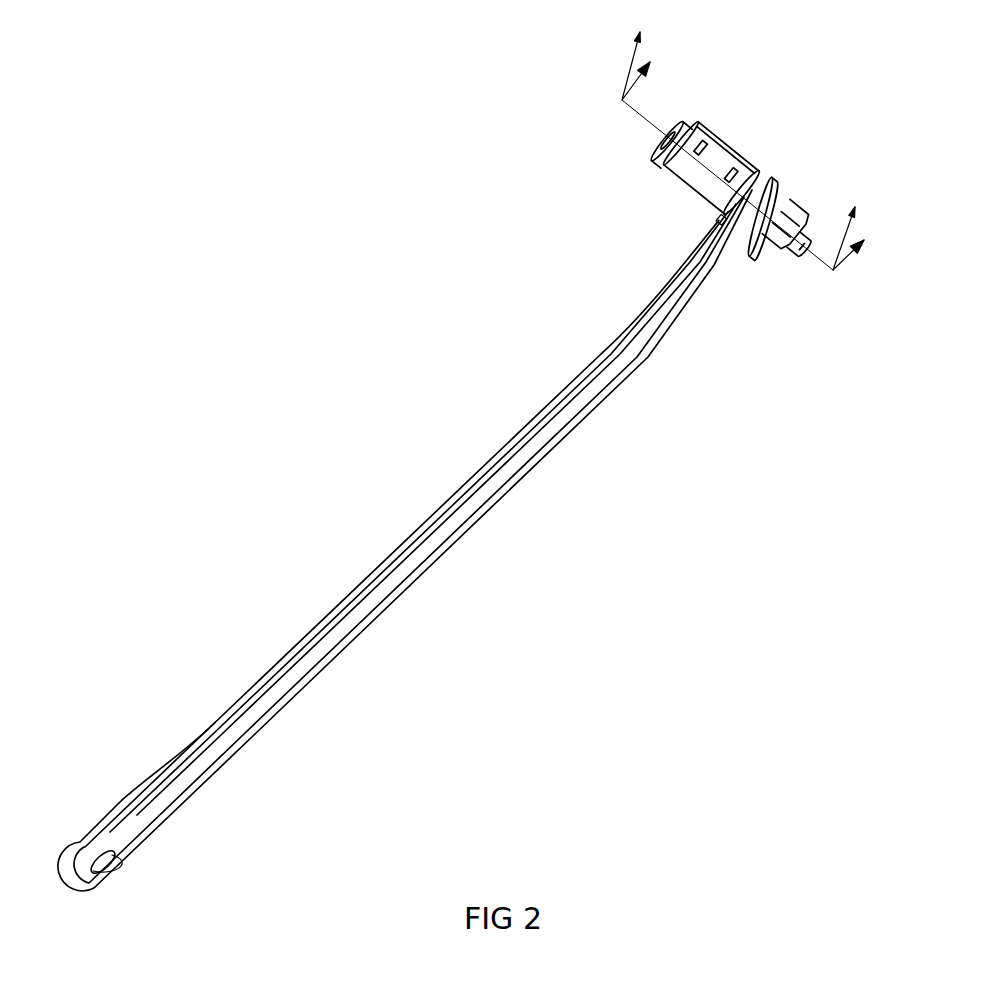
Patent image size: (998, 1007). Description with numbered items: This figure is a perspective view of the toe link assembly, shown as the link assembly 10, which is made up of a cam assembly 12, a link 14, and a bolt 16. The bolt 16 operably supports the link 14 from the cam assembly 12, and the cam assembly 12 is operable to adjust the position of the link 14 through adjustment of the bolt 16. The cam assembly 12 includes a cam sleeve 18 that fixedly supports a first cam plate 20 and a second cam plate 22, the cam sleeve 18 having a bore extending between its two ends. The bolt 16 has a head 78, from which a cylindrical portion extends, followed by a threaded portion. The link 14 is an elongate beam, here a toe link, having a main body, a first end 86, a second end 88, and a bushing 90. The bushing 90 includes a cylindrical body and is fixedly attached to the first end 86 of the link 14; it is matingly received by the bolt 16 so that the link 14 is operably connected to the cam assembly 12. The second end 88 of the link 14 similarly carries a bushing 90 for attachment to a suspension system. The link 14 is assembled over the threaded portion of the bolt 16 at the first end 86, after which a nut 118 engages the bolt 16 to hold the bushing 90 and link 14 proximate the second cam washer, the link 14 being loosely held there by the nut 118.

The link assembly 10 is at (246, 325).
The cam assembly 12 is at (730, 128).
The link 14 is at (452, 550).
The bolt 16 is at (799, 245).
The cam sleeve 18 is at (710, 167).
The first cam plate 20 is at (670, 143).
The second cam plate 22 is at (741, 192).
The head 78 is at (667, 141).
The first end 86 is at (761, 218).
The second end 88 is at (63, 873).
The bushing 90 is at (721, 219).
The nut 118 is at (786, 225).